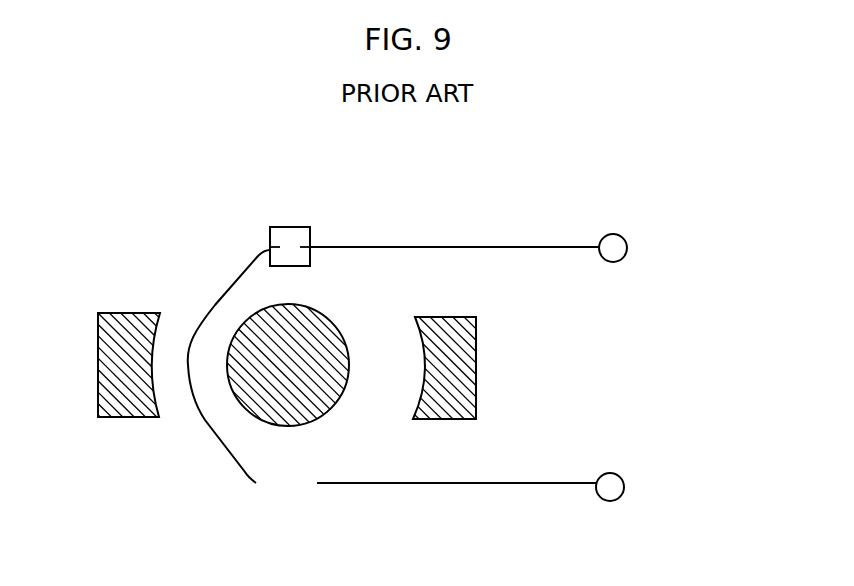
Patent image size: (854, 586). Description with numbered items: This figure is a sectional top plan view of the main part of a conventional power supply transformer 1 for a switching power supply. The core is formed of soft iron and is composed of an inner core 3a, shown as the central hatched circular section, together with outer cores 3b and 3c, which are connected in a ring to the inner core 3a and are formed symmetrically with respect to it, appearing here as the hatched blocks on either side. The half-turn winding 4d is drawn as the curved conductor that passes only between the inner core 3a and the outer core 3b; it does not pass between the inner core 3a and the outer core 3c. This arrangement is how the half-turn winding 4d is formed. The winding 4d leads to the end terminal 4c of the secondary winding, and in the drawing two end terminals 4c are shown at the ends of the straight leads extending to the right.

The power supply transformer 1 is at (268, 218).
The inner core 3a is at (328, 395).
The outer core 3b is at (124, 315).
The outer core 3c is at (468, 367).
The end terminal 4c is at (624, 250).
The 0.5-turn winding 4d is at (203, 423).